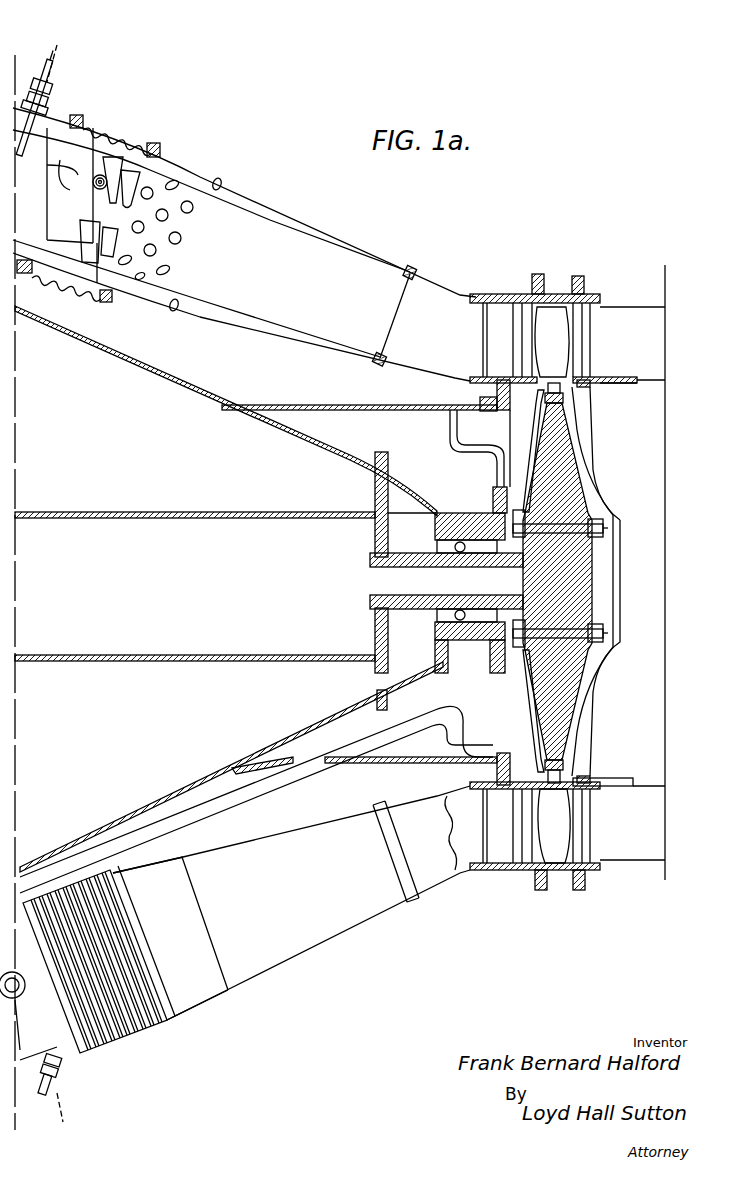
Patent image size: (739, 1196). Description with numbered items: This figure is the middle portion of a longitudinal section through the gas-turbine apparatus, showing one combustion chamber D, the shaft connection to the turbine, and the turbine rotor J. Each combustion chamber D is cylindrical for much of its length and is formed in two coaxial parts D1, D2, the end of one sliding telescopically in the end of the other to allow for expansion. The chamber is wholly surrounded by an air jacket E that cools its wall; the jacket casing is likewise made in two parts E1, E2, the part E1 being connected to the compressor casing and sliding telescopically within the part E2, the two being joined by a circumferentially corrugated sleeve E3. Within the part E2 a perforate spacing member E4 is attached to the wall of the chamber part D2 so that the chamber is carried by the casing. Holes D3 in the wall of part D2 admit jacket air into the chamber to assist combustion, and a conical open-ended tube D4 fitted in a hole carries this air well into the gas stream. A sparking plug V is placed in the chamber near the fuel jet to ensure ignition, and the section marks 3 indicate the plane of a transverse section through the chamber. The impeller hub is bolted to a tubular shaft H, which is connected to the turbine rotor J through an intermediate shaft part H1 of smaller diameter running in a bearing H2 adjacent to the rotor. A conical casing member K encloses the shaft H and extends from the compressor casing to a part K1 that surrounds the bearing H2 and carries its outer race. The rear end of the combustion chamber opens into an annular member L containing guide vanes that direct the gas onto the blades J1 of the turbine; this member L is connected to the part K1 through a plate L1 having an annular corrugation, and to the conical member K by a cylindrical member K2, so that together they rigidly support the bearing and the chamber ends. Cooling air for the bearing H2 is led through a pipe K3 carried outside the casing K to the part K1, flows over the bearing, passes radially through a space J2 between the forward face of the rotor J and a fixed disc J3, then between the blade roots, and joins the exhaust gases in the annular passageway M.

The section line 3- 3 is at (44, 64).
The air jacket E is at (127, 153).
The jacket casing part E1 is at (60, 130).
The combustion chamber D is at (80, 153).
The combustion chamber part D1 is at (83, 163).
The combustion chamber part D2 is at (100, 163).
The holes D3 is at (165, 272).
The conical open-ended tube D4 is at (125, 173).
The jacket casing part E2 is at (207, 177).
The circumferentially corrugated sleeve E3 is at (122, 160).
The perforate spacing member E4 is at (221, 177).
The annular member L is at (516, 296).
The plate L1 is at (470, 412).
The turbine rotor J is at (560, 464).
The turbine blades J1 is at (555, 318).
The space J2 is at (545, 505).
The fixed disc J3 is at (545, 440).
The annular passageway M is at (617, 305).
The conical casing member K is at (205, 390).
The bearing-carrying part K1 is at (413, 673).
The cylindrical member K2 is at (353, 763).
The pipe K3 is at (290, 758).
The tubular shaft H is at (140, 512).
The intermediate shaft part H1 is at (370, 624).
The bearing H2 is at (470, 613).
The sparking plug V is at (57, 1060).